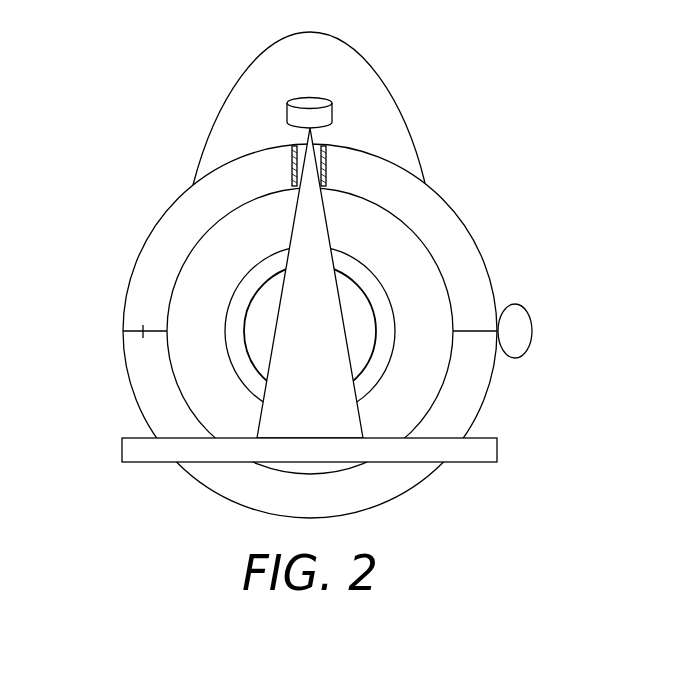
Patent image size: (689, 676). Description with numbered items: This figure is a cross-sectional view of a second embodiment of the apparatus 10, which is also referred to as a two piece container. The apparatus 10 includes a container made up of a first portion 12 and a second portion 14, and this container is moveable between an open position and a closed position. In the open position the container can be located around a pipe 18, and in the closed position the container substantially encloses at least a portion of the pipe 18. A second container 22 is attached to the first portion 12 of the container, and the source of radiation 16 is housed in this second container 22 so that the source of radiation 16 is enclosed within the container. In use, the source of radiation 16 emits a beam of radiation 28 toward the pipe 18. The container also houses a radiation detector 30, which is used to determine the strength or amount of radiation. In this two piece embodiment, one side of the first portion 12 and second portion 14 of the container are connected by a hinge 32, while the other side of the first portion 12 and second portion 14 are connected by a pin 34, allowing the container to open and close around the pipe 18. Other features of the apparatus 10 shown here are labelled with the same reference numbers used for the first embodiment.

The apparatus 10 is at (455, 497).
The first portion 12 is at (153, 233).
The second portion 14 is at (226, 490).
The source of radiation 16 is at (334, 112).
The pipe 18 is at (240, 288).
The second container 22 is at (352, 56).
The beam of radiation 28 is at (330, 225).
The radiation detector 30 is at (498, 448).
The hinge 32 is at (125, 333).
The pin 34 is at (532, 331).